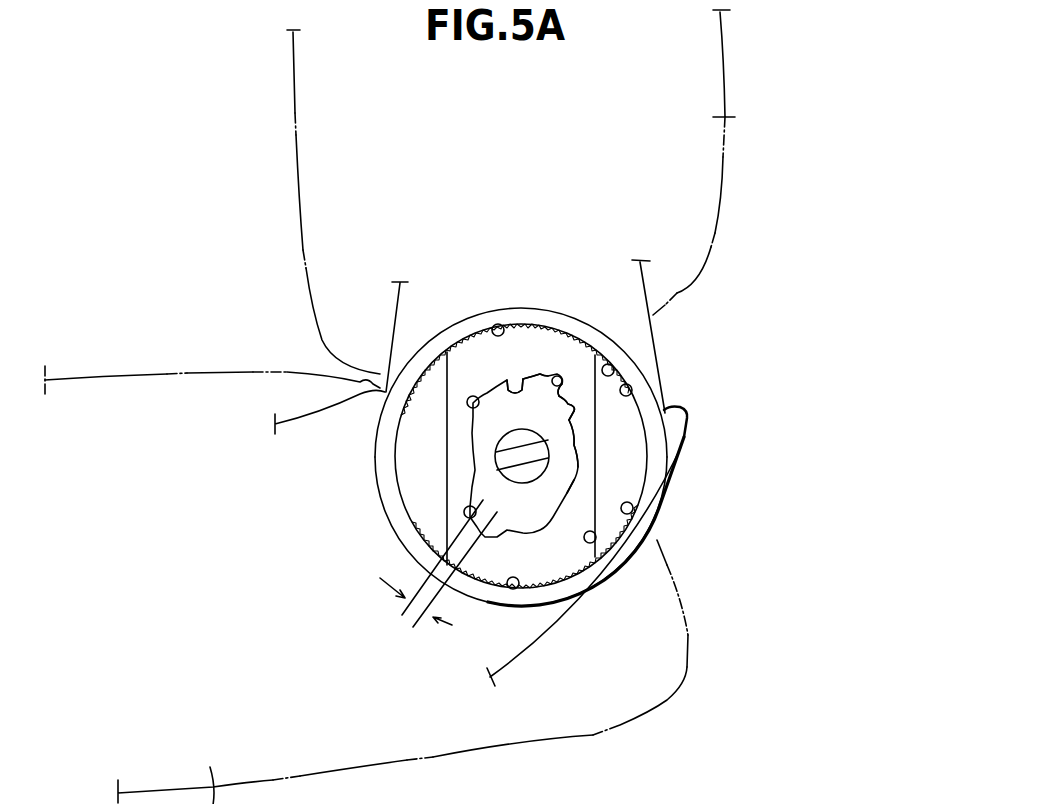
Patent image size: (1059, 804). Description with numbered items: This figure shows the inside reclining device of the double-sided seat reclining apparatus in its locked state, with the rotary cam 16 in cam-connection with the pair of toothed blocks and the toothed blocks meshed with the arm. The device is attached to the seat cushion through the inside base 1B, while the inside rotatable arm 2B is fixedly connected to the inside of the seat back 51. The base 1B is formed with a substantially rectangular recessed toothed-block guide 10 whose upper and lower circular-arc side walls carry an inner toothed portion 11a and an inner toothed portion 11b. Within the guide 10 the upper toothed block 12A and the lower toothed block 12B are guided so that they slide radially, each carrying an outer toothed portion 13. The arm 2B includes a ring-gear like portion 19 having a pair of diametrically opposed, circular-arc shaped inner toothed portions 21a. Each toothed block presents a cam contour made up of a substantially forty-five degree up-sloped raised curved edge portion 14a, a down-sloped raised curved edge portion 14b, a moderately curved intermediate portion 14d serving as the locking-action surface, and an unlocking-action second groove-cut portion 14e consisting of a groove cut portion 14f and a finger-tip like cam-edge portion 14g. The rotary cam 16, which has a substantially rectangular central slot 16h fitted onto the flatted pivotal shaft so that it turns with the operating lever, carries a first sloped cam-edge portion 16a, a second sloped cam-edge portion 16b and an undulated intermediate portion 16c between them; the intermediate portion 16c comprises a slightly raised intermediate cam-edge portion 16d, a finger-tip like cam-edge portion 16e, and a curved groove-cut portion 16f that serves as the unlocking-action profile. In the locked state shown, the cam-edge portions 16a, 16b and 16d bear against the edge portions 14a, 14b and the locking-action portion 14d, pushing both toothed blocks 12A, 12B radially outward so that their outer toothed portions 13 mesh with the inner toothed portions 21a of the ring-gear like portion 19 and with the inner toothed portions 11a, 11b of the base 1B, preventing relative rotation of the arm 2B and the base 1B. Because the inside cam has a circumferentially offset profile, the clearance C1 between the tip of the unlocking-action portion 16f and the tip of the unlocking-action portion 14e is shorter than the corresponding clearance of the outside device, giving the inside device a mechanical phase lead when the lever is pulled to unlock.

The seat back 51 is at (733, 118).
The inside rotatable arm 2B is at (391, 352).
The inside base 1B is at (555, 635).
The recessed toothed-block guide 10 is at (657, 540).
The upper toothed block 12A is at (475, 337).
The lower toothed block 12B is at (480, 585).
The outer toothed portion 13 is at (462, 350).
The ring-gear like portion 19 is at (648, 383).
The up-sloped raised curved edge portion 14a is at (468, 447).
The down-sloped raised curved edge portion 14b is at (557, 447).
The moderately-curved intermediate portion 14d is at (537, 377).
The second curved groove-cut portion 14e is at (640, 178).
The groove cut portion 14f is at (573, 380).
The finger-tip like cam-edge portion 14g is at (583, 392).
The rotary cam 16 is at (470, 472).
The first sloped cam-edge portion 16a is at (445, 392).
The second sloped cam-edge portion 16b is at (557, 422).
The undulated intermediate portion 16c is at (470, 398).
The intermediate cam-edge portion 16d is at (520, 375).
The finger-tip like cam-edge portion 16e is at (552, 378).
The curved groove-cut portion 16f is at (522, 530).
The substantially rectangular central slot 16h is at (567, 462).
The inner toothed portion 21a is at (632, 388).
The inner toothed portion 11a is at (495, 325).
The inner toothed portion 11b is at (521, 590).
The clearance C1 is at (406, 595).